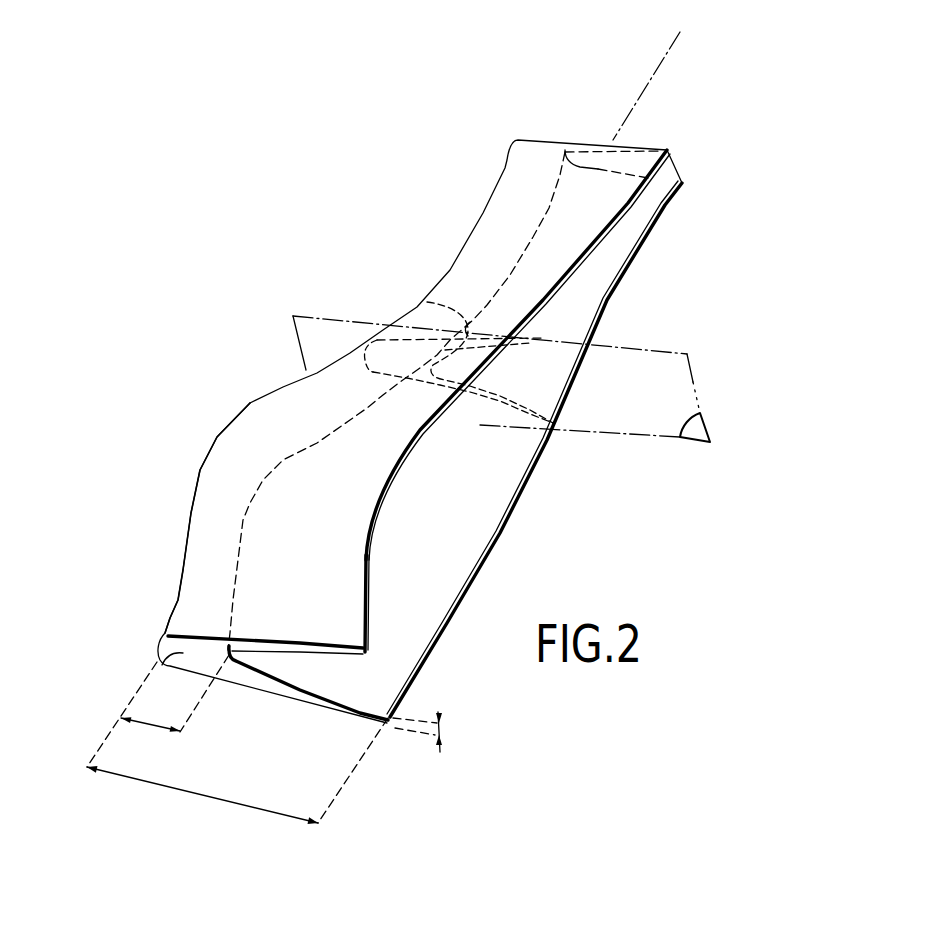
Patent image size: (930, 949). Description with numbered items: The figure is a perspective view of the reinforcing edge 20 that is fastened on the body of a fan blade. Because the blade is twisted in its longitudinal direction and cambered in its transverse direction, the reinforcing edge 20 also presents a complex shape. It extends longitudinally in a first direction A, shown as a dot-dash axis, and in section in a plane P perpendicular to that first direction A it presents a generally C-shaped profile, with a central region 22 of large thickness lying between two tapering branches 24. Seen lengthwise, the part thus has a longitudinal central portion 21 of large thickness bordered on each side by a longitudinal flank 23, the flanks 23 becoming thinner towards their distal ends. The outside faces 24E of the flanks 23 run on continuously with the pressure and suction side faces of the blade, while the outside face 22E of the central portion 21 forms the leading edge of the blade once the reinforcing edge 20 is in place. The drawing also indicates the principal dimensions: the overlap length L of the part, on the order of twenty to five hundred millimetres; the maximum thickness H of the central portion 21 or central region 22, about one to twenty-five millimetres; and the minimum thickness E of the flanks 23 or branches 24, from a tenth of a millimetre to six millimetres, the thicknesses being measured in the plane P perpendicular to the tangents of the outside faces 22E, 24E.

The reinforcing edge 20 is at (560, 460).
The longitudinal central portion 21 is at (157, 659).
The central region 22 is at (372, 372).
The outside face of the central portion 22E is at (200, 588).
The longitudinal flanks 23 is at (328, 648).
The tapering branches 24 is at (427, 302).
The outside faces of the flanks 24E is at (323, 588).
The first direction A is at (675, 42).
The plane P is at (700, 430).
The maximum thickness H is at (158, 711).
The overlap length L is at (237, 771).
The minimum thickness E is at (427, 732).